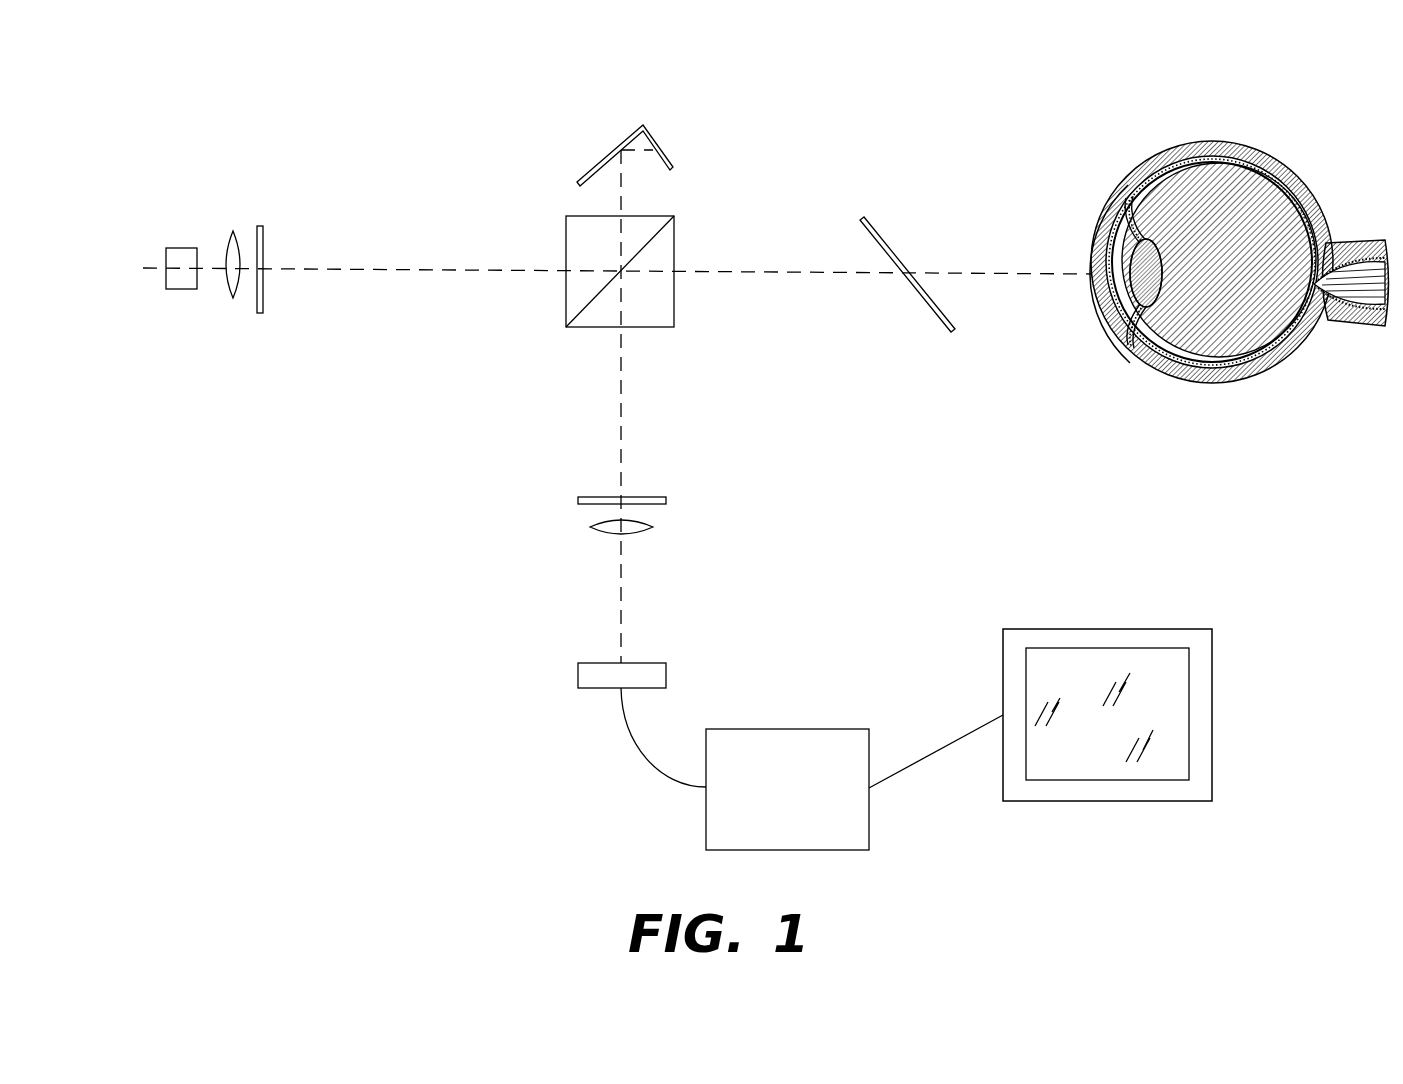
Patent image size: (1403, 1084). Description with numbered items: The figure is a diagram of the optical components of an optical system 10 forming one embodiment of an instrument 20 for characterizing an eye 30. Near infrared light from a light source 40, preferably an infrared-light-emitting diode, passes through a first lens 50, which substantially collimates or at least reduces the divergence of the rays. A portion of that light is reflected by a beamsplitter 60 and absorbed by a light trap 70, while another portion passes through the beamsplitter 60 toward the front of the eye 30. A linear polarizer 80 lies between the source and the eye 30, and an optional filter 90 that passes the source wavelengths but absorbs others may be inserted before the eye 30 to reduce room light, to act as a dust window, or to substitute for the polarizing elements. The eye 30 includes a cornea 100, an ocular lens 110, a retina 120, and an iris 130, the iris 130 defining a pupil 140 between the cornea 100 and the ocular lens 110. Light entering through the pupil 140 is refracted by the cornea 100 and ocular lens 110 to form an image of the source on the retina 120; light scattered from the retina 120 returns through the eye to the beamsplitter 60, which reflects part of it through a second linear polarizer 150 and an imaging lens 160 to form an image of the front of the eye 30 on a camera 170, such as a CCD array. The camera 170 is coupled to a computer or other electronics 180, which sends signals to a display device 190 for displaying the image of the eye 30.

The optical system 10 is at (432, 128).
The instrument 20 is at (242, 637).
The eye 30 is at (1205, 247).
The light source 40 is at (182, 248).
The first lens 50 is at (235, 298).
The beamsplitter 60 is at (566, 253).
The light trap 70 is at (660, 147).
The linear polarizer 80 is at (263, 247).
The filter 90 is at (893, 248).
The cornea 100 is at (1092, 253).
The ocular lens 110 is at (1133, 192).
The retina 120 is at (1300, 192).
The iris 130 is at (1112, 328).
The pupil 140 is at (1122, 273).
The linear polarizer 150 is at (642, 497).
The imaging lens 160 is at (590, 527).
The camera 170 is at (578, 675).
The computer or other electronics 180 is at (787, 729).
The display device 190 is at (1105, 629).